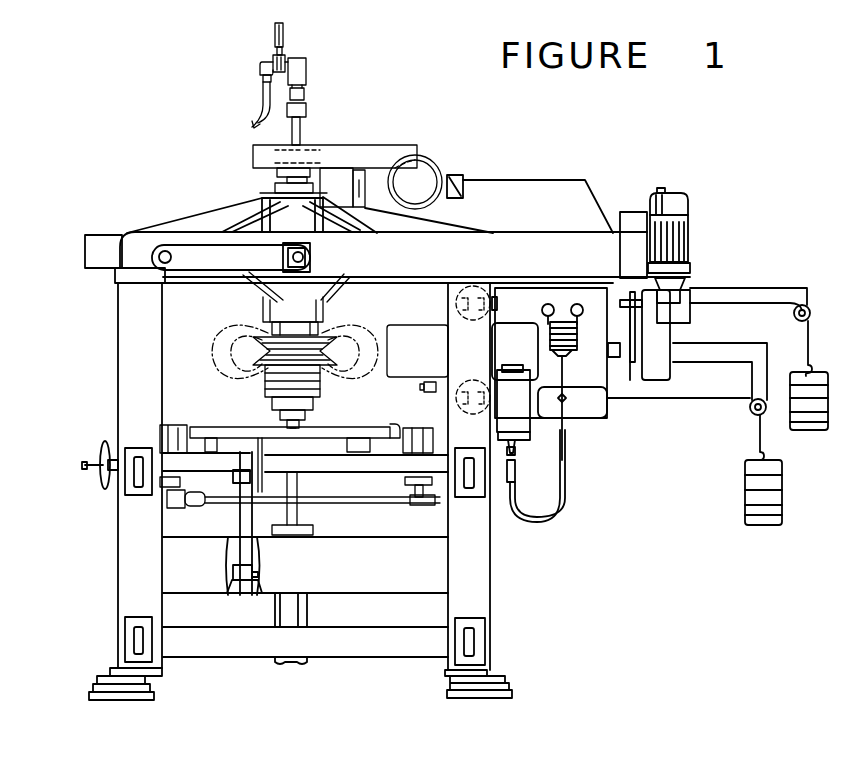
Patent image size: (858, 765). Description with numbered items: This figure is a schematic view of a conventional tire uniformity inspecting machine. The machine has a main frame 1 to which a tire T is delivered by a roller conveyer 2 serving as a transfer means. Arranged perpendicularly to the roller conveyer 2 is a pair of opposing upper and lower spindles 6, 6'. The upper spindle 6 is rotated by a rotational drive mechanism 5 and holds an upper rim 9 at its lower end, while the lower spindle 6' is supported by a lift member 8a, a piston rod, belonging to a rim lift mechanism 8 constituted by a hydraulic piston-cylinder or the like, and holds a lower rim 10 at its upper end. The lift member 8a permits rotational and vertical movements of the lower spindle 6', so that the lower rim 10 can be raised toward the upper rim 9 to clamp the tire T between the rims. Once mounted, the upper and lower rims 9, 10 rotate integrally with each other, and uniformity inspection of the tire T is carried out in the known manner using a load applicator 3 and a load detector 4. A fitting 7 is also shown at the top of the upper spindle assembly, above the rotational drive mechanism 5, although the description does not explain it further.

The main frame 1 is at (124, 550).
The roller conveyer 2 is at (213, 428).
The load applicator 3 is at (411, 325).
The load detector 4 is at (480, 291).
The rotational drive mechanism 5 is at (432, 153).
The upper spindle 6 is at (284, 304).
The lower spindle 6' is at (273, 391).
The fluid supply fitting 7 is at (313, 52).
The rim lift mechanism 8 is at (307, 612).
The lift member 8a is at (297, 483).
The upper rim 9 is at (327, 337).
The lower rim 10 is at (331, 370).
The tire T is at (214, 341).